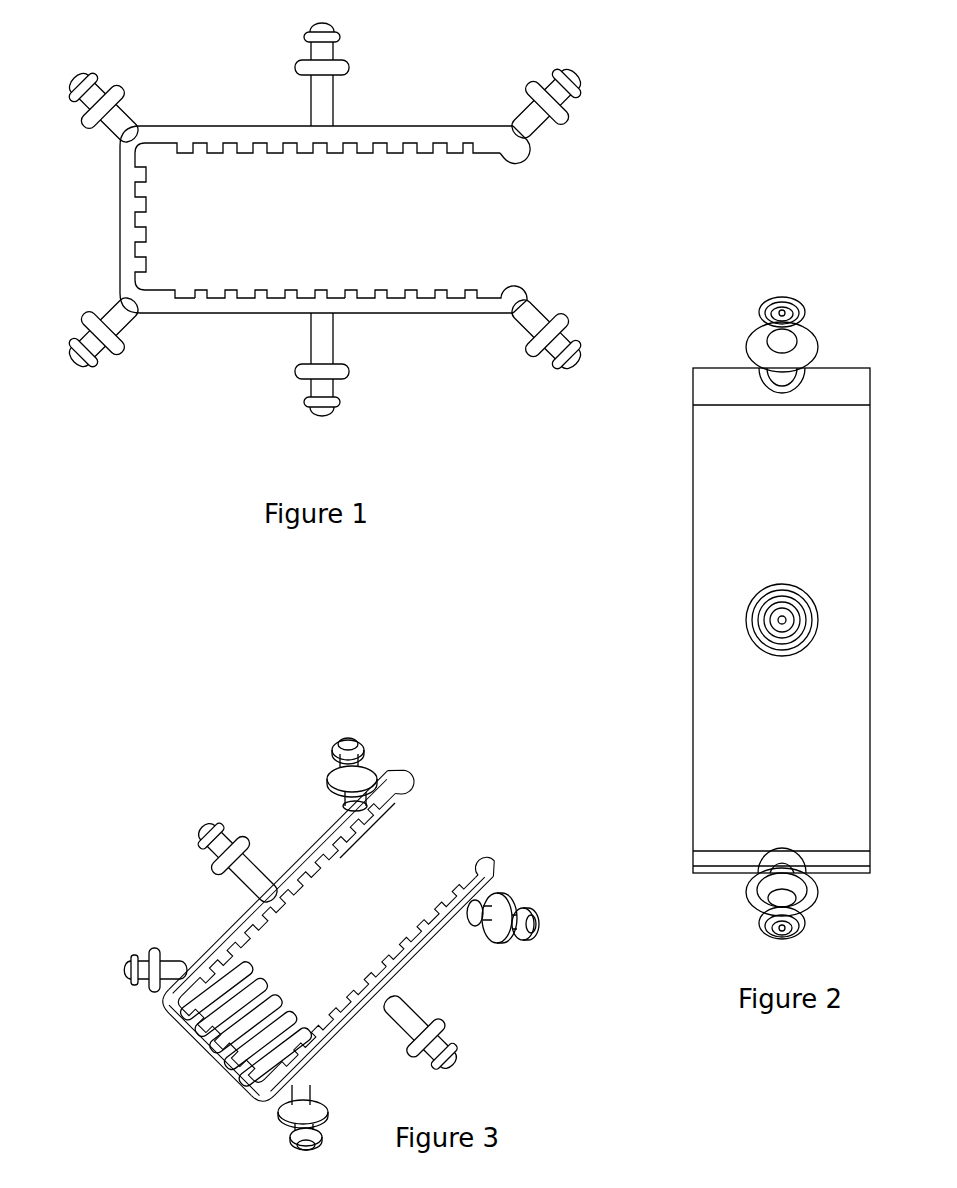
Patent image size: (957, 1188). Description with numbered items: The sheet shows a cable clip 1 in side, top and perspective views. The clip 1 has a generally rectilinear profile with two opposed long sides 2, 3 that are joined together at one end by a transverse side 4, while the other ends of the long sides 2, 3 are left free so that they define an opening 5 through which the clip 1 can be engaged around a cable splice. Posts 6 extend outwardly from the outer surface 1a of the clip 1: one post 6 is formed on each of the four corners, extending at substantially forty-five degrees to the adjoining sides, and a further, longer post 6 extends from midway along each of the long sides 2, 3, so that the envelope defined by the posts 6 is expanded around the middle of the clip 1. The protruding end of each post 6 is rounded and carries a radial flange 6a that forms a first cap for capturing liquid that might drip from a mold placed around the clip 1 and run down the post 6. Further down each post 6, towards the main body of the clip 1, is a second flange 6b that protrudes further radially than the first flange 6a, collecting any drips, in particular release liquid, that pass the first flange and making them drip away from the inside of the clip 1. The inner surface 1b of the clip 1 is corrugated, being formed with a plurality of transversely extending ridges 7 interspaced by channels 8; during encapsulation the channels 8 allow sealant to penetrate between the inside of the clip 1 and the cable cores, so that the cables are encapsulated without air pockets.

In FIG. 1, the cable clip 1 is at (200, 105).
In FIG. 3, the cable clip 1 is at (295, 830).
In FIG. 2, the outer surface 1a is at (757, 722).
In FIG. 1, the inner surface 1b is at (168, 288).
In FIG. 1, the long side 2 is at (258, 138).
In FIG. 2, the long side 2 is at (775, 520).
In FIG. 1, the long side 3 is at (197, 308).
In FIG. 1, the transverse side 4 is at (132, 221).
In FIG. 1, the opening 5 is at (513, 247).
In FIG. 3, the opening 5 is at (422, 842).
In FIG. 1, the post 6 is at (522, 118).
In FIG. 2, the post 6 is at (763, 378).
In FIG. 3, the post 6 is at (337, 760).
In FIG. 1, the radial flange 6a is at (580, 80).
In FIG. 2, the radial flange 6a is at (783, 620).
In FIG. 2, the second flange 6b is at (752, 345).
In FIG. 3, the second flange 6b is at (232, 852).
In FIG. 1, the ridge 7 is at (407, 297).
In FIG. 3, the ridge 7 is at (243, 1063).
In FIG. 1, the channel 8 is at (273, 297).
In FIG. 3, the channel 8 is at (190, 1028).